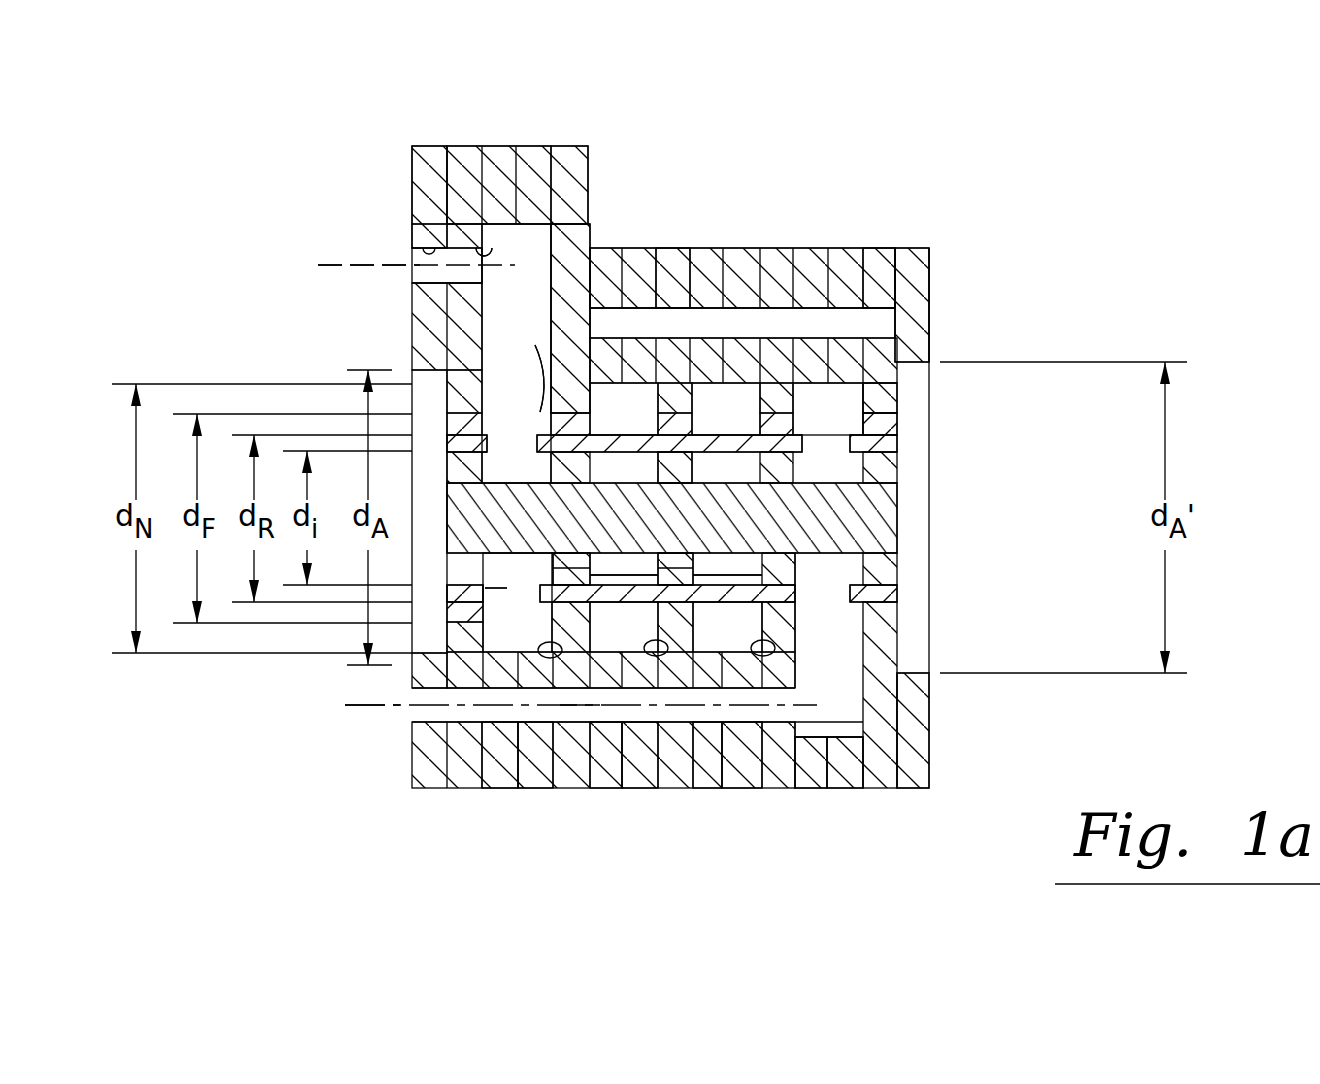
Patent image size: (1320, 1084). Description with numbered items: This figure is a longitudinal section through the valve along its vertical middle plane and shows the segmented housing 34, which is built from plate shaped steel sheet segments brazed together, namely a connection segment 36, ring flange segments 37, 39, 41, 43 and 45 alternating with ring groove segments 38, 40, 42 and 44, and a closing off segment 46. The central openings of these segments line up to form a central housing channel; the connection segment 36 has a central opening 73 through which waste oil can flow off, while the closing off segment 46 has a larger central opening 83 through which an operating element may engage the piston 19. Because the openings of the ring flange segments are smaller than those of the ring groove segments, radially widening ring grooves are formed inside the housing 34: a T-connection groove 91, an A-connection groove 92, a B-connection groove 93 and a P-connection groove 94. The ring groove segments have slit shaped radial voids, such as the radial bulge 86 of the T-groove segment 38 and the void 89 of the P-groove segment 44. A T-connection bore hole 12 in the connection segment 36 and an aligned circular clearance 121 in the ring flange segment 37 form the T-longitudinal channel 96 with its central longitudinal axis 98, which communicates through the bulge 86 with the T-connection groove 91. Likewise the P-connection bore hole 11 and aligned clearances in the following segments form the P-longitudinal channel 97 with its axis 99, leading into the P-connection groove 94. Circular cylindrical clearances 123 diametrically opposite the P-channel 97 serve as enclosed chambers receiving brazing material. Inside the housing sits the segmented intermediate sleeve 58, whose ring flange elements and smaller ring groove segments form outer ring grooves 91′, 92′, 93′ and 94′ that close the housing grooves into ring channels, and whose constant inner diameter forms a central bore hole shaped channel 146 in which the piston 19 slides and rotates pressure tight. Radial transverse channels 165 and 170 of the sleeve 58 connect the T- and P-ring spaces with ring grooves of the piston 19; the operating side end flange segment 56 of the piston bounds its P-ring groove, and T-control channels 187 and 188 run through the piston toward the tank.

The connection segment 36 is at (412, 170).
The ring flange segment 37 is at (468, 152).
The ring flange segment 39 is at (572, 150).
The T-connection bore hole 12 is at (410, 255).
The central longitudinal axis of the T-longitudinal channel 98 is at (340, 268).
The T-longitudinal channel 96 is at (430, 276).
The circular clearance 121 is at (492, 256).
The radial bulge 86 is at (506, 318).
The central opening of the connection segment 73 is at (430, 367).
The ring flange segment 43 is at (781, 250).
The circular cylindrical clearance 123 is at (636, 308).
The ring flange segment 41 is at (665, 255).
The T-control channel 187 is at (677, 460).
The ring flange segment 45 is at (886, 258).
The closing off segment 46 is at (930, 262).
The housing 34 is at (940, 292).
The P-connection groove 94 is at (865, 392).
The intermediate sleeve 58 is at (910, 422).
The radial transverse channel 170 is at (910, 461).
The piston 19 is at (912, 485).
The T-control channel 188 is at (675, 565).
The central bore hole shaped channel 146 is at (805, 575).
The end flange segment 56 is at (885, 572).
The central opening of the closing off segment 83 is at (912, 673).
The slit shaped radial void 89 is at (840, 683).
The outer ring groove 94′ is at (795, 590).
The outer ring groove 92′ is at (624, 627).
The outer ring groove 93′ is at (727, 627).
The P-connection bore hole 11 is at (413, 695).
The central longitudinal axis of the P-channel 99 is at (362, 707).
The radial transverse channel 165 is at (503, 597).
The ring groove segment 38 is at (530, 777).
The outer ring groove 91′ is at (547, 603).
The T-connection groove 91 is at (552, 660).
The P-longitudinal channel 97 is at (577, 715).
The ring groove segment 40 is at (632, 782).
The A-connection groove 92 is at (666, 656).
The ring groove segment 42 is at (730, 780).
The B-connection groove 93 is at (772, 656).
The ring groove segment 44 is at (842, 773).